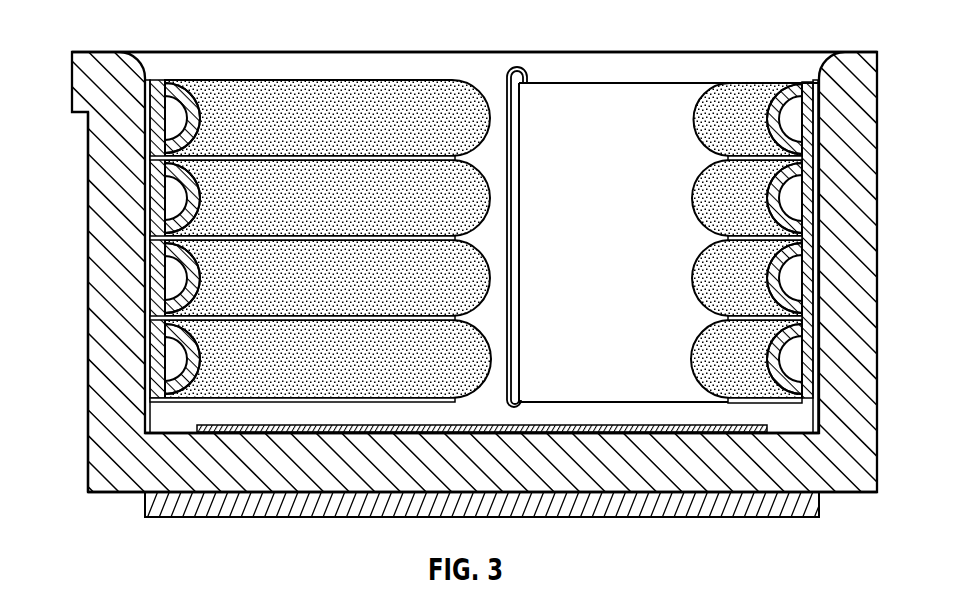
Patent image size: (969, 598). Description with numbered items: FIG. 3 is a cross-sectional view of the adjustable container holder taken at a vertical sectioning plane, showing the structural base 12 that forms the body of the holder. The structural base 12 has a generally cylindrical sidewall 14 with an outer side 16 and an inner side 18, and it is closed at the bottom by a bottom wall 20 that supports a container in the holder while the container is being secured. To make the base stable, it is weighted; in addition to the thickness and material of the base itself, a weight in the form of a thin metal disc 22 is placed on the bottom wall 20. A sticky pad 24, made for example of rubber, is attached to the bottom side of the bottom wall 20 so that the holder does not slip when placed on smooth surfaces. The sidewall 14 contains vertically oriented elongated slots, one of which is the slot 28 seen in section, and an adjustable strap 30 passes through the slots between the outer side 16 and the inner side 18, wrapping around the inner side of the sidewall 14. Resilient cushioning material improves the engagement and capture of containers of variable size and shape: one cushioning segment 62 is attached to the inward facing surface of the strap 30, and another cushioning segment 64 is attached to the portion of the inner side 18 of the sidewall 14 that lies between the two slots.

The structural base 12 is at (447, 298).
The cylindrical sidewall 14 is at (108, 270).
The outer side 16 is at (87, 427).
The inner side 18 is at (558, 72).
The bottom wall 20 is at (240, 473).
The thin metal disc 22 is at (733, 433).
The sticky pad 24 is at (355, 500).
The elongated slot 28 is at (516, 67).
The adjustable strap 30 is at (636, 234).
The cushioning segment 62 is at (703, 288).
The cushioning segment 64 is at (485, 275).